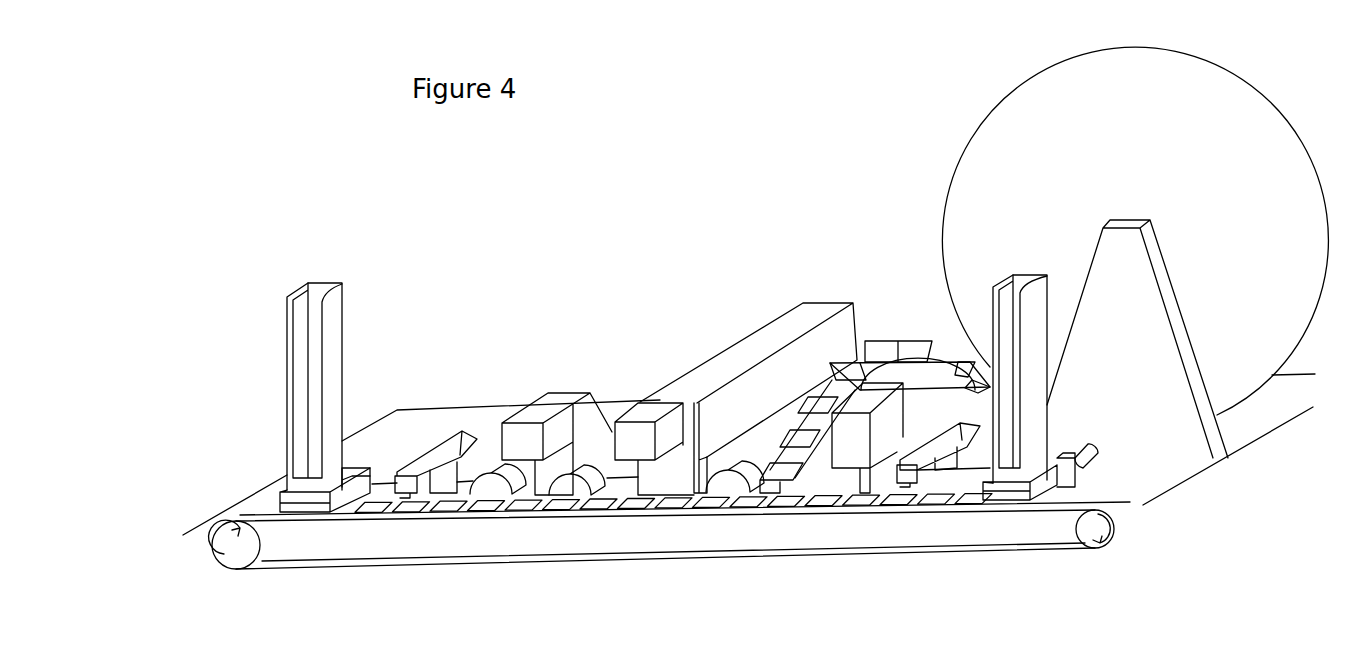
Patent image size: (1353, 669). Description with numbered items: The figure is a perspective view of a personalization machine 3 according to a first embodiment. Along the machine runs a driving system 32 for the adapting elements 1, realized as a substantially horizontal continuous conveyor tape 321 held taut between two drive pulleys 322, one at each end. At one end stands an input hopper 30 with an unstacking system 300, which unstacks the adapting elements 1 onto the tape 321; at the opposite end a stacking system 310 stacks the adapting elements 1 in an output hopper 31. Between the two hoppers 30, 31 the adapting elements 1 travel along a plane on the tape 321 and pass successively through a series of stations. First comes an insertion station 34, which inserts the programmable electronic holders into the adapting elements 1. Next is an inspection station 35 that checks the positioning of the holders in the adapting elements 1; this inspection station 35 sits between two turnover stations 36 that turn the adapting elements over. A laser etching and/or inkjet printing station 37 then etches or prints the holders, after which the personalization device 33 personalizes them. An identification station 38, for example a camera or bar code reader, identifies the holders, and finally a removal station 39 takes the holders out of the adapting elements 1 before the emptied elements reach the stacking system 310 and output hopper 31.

The adapting elements 1 is at (368, 508).
The personalization machine 3 is at (284, 198).
The input hopper 30 is at (300, 333).
The unstacking system 300 is at (348, 470).
The output hopper 31 is at (1037, 341).
The stacking system 310 is at (1055, 463).
The driving system 32 is at (1025, 532).
The conveyor tape 321 is at (687, 555).
The drive pulleys 322 is at (230, 543).
The personalization device 33 is at (913, 373).
The insertion station 34 is at (437, 453).
The inspection station 35 is at (542, 412).
The turnover stations 36 is at (570, 490).
The laser etching and/or inkjet printing station 37 is at (733, 360).
The identification station 38 is at (882, 433).
The removal station 39 is at (942, 443).